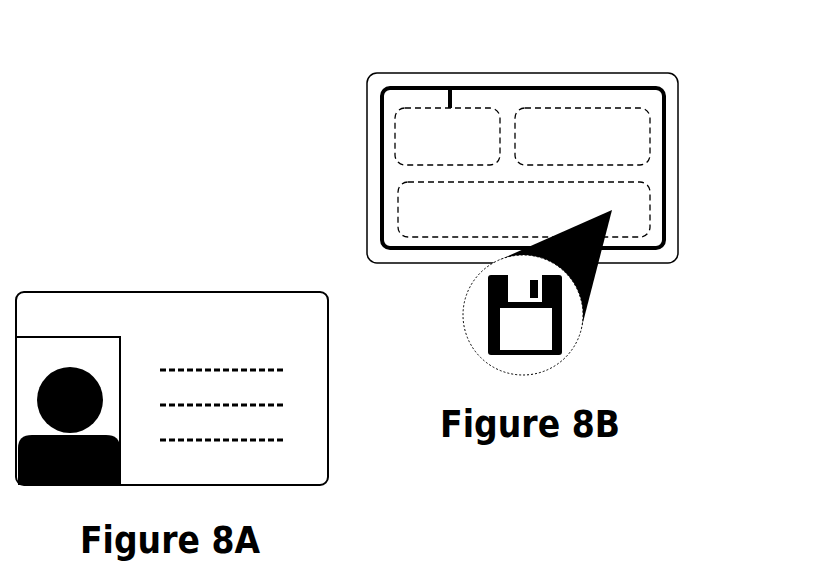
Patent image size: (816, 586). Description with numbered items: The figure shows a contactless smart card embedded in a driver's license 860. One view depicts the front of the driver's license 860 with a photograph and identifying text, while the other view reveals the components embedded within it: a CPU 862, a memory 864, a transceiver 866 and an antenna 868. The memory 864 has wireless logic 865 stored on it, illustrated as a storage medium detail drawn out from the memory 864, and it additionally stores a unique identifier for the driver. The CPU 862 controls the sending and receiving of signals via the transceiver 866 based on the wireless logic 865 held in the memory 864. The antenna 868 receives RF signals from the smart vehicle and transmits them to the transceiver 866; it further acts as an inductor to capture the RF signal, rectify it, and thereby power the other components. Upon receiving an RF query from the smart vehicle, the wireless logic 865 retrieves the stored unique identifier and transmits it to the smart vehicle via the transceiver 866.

In FIG. 8A, the driver's license 860 is at (120, 292).
In FIG. 8B, the driver's license 860 is at (550, 73).
In FIG. 8B, the CPU 862 is at (650, 138).
In FIG. 8B, the memory 864 is at (635, 238).
In FIG. 8B, the wireless logic 865 is at (488, 323).
In FIG. 8B, the transceiver 866 is at (382, 118).
In FIG. 8B, the antenna 868 is at (493, 87).